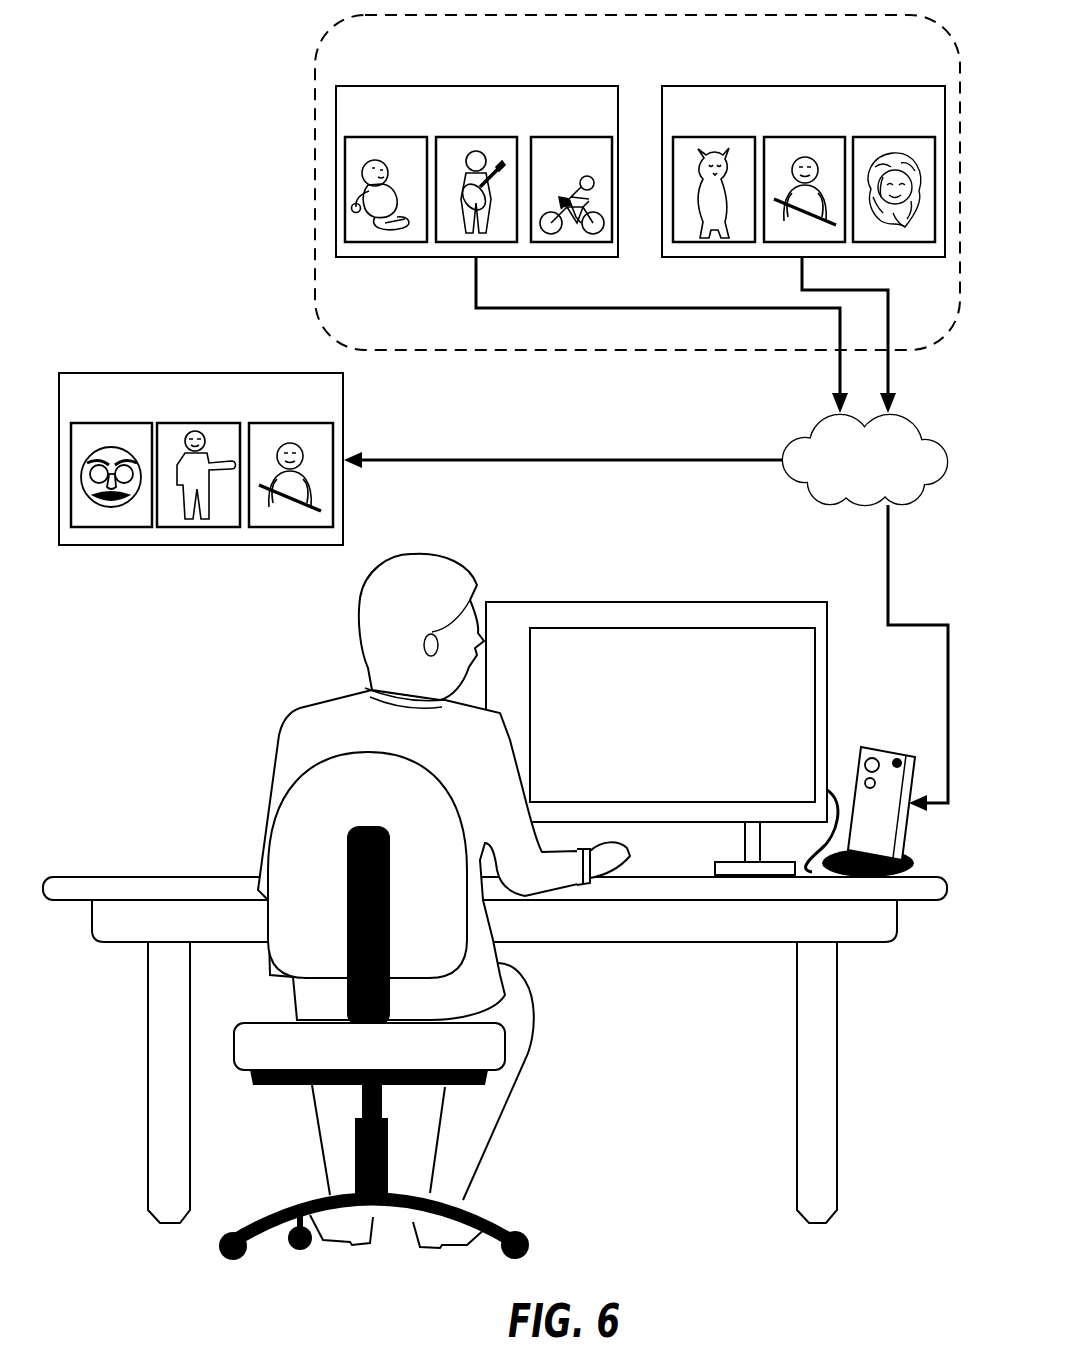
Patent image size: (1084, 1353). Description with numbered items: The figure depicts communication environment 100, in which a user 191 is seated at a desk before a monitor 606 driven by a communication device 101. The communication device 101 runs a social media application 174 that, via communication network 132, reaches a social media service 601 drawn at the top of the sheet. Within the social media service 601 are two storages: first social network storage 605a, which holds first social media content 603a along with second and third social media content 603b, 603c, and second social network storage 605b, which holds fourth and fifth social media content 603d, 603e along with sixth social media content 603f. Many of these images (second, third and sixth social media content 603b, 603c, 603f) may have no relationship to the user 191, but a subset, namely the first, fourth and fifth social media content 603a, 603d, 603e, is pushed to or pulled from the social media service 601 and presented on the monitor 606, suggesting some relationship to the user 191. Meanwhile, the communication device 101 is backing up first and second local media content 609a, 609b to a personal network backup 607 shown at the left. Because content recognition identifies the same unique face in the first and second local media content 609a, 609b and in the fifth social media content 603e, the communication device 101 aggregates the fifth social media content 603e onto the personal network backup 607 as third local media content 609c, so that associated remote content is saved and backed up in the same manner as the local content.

The communication environment 100 is at (126, 74).
The social media service 601 is at (750, 49).
The first social network storage 605a is at (607, 116).
The second social network storage 605b is at (933, 116).
The first social media content 603a is at (345, 172).
The second social media content 603b is at (455, 242).
The third social media content 603c is at (590, 242).
The fourth social media content 603d is at (674, 156).
The fifth social media content 603e is at (786, 247).
The sixth social media content 603f is at (880, 248).
The communication network 132 is at (922, 471).
The personal network backup 607 is at (336, 400).
The first local media content 609a is at (122, 530).
The second local media content 609b is at (199, 530).
The third local media content 609c is at (298, 530).
The monitor 606 is at (631, 601).
The social media application 174 is at (801, 657).
The communication device 101 is at (893, 758).
The user 191 is at (268, 767).